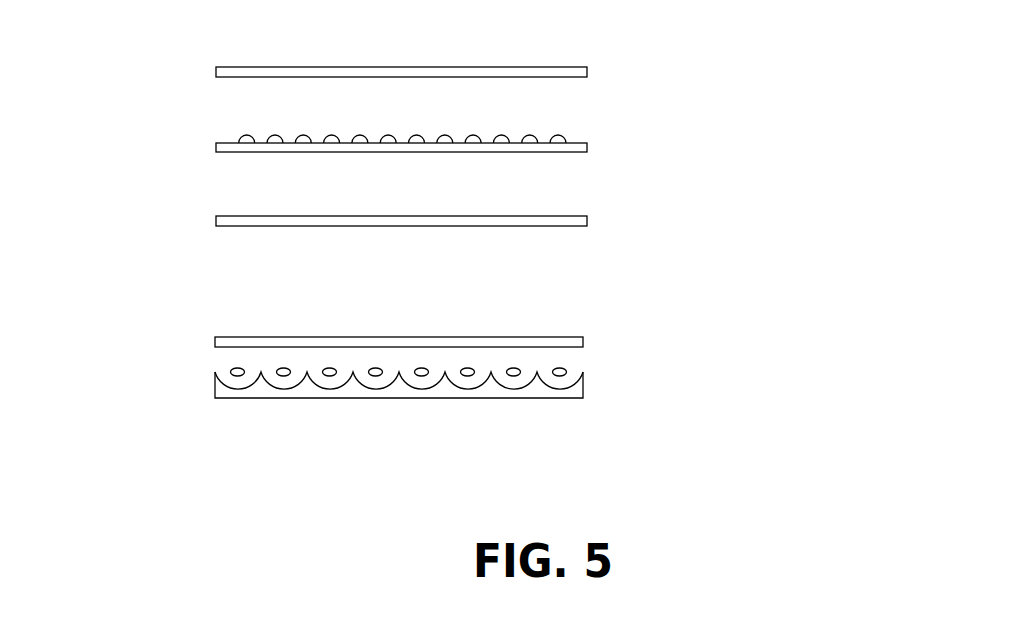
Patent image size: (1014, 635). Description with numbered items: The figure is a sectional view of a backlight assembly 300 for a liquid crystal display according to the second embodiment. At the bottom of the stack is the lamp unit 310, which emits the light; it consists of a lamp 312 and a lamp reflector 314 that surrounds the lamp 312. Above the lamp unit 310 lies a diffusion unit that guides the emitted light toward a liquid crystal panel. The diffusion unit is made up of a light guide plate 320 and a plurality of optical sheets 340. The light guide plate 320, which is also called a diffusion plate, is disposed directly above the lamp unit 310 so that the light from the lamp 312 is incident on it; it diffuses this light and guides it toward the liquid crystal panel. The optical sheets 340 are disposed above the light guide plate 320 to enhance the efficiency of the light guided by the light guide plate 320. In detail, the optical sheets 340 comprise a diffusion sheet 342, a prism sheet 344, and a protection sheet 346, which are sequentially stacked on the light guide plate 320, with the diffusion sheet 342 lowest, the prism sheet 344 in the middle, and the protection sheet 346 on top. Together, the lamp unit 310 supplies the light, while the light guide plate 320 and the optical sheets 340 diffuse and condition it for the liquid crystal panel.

The backlight assembly 300 is at (705, 344).
The lamp unit 310 is at (103, 347).
The lamp 312 is at (233, 371).
The lamp reflector 314 is at (213, 391).
The light guide plate 320 is at (583, 343).
The optical sheets 340 is at (695, 70).
The diffusion sheet 342 is at (587, 222).
The prism sheet 344 is at (587, 148).
The protection sheet 346 is at (587, 74).